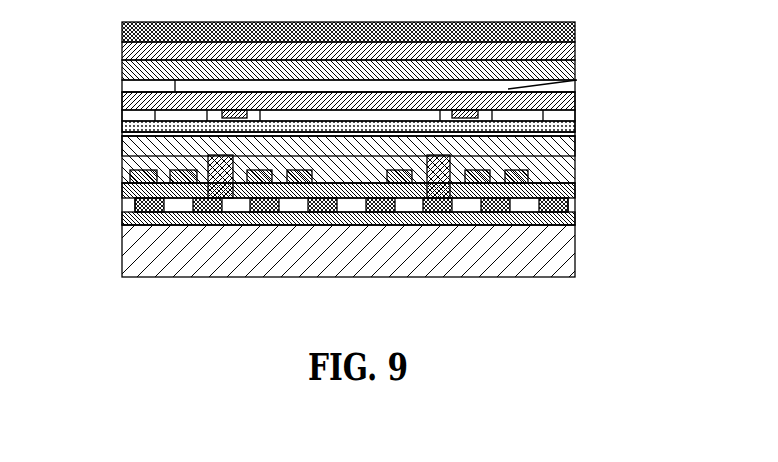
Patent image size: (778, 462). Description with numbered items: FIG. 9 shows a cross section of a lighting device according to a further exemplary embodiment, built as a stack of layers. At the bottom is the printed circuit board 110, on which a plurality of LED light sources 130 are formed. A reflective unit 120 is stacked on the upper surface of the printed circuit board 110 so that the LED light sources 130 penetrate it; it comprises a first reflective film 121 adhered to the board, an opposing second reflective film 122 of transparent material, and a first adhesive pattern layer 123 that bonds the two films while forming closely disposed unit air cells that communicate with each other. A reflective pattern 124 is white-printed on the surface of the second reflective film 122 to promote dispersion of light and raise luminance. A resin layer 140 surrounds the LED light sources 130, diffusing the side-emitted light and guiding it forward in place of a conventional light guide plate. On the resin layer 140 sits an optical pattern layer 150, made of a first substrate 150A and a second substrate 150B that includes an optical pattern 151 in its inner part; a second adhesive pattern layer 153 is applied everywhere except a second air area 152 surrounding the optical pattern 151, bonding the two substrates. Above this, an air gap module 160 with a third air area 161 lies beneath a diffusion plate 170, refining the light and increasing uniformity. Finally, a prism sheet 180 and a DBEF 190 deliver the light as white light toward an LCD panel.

The printed circuit board 110 is at (577, 257).
The reflective unit 120 is at (68, 168).
The first reflective film 121 is at (122, 219).
The second reflective film 122 is at (122, 190).
The first adhesive pattern layer 123 is at (135, 205).
The reflective pattern 124 is at (130, 176).
The LED light source 130 is at (223, 196).
The resin layer 140 is at (577, 170).
The optical pattern layer 150 is at (68, 93).
The first substrate 150A is at (122, 100).
The second substrate 150B is at (122, 127).
The optical pattern 151 is at (577, 146).
The second air area 152 is at (577, 134).
The second adhesive pattern layer 153 is at (577, 116).
The air gap module 160 is at (577, 87).
The third air area 161 is at (577, 80).
The diffusion plate 170 is at (577, 63).
The prism sheet 180 is at (577, 45).
The DBEF 190 is at (577, 27).